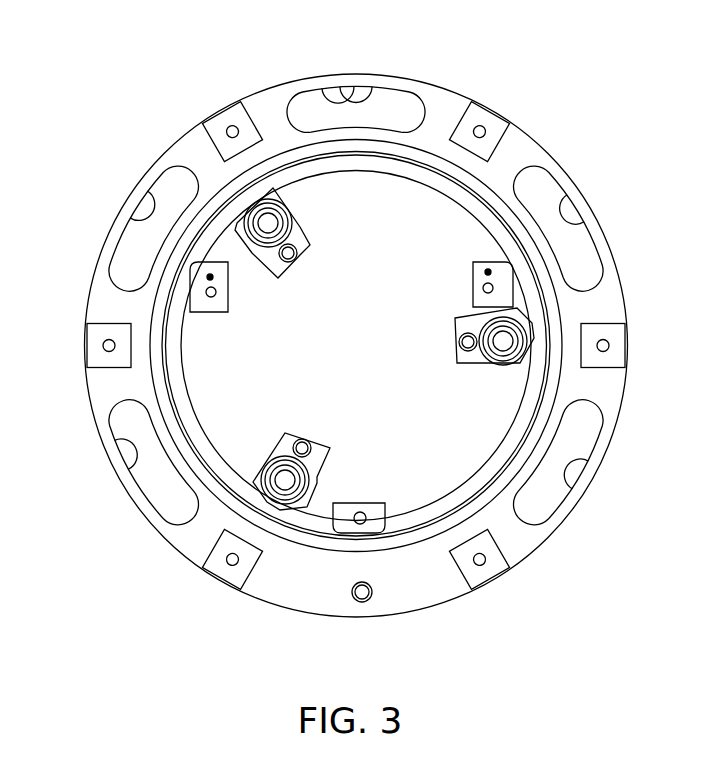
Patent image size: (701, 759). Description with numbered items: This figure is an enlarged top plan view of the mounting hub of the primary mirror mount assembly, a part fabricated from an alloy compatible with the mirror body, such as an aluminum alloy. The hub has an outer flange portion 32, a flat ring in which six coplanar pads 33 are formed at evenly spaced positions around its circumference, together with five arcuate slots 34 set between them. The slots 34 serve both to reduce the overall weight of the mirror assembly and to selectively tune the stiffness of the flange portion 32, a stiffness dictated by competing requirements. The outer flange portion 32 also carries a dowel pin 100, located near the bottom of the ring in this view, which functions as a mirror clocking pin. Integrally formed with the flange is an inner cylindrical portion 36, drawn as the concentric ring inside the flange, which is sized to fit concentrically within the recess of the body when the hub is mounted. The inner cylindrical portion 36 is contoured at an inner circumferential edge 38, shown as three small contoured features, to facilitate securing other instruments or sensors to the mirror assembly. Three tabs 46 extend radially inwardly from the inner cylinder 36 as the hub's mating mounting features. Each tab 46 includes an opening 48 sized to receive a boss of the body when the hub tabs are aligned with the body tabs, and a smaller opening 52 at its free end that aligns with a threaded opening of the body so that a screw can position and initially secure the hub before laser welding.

The outer flange portion 32 is at (423, 598).
The coplanar pad 33 is at (230, 118).
The slot 34 is at (355, 88).
The inner cylindrical portion 36 is at (182, 392).
The inner circumferential edge 38 is at (228, 298).
The tab 46 is at (300, 226).
The opening 48 is at (288, 220).
The smaller opening 52 is at (297, 256).
The dowel pin 100 is at (354, 596).